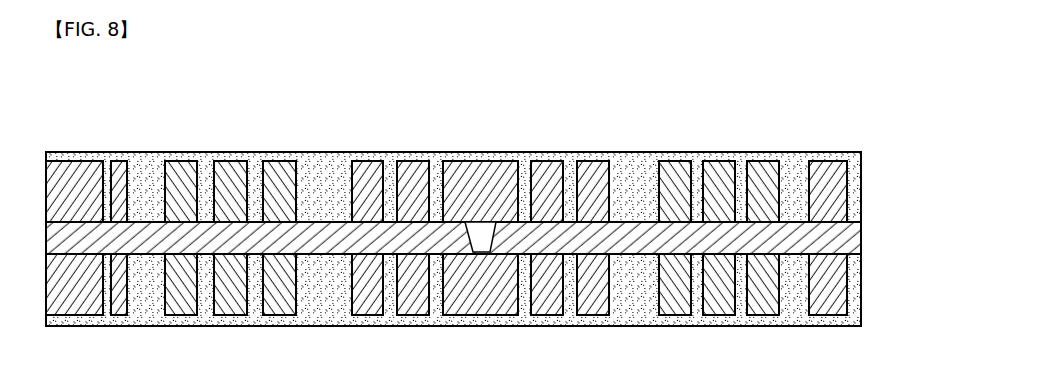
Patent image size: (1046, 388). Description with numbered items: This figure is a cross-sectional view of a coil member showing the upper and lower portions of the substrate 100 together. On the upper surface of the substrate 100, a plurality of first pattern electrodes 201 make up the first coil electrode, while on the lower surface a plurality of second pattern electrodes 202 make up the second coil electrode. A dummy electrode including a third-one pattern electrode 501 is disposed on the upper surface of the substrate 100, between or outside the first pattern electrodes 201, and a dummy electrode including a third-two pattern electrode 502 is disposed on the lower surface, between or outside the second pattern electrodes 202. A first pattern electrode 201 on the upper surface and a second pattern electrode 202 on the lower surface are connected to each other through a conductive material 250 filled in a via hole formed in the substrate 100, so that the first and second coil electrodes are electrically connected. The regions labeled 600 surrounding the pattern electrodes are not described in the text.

The substrate 100 is at (862, 237).
The conductive material 250 is at (480, 228).
The 3-1 pattern electrode 501 is at (368, 164).
The 3-2 pattern electrode 502 is at (415, 313).
The first pattern electrode 201 is at (673, 165).
The second pattern electrode 202 is at (676, 313).
The insulating filler 600 is at (795, 165).